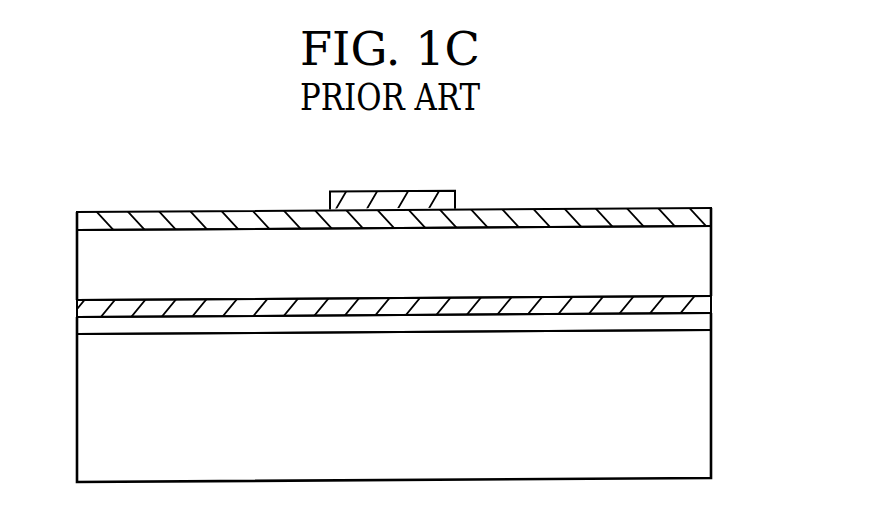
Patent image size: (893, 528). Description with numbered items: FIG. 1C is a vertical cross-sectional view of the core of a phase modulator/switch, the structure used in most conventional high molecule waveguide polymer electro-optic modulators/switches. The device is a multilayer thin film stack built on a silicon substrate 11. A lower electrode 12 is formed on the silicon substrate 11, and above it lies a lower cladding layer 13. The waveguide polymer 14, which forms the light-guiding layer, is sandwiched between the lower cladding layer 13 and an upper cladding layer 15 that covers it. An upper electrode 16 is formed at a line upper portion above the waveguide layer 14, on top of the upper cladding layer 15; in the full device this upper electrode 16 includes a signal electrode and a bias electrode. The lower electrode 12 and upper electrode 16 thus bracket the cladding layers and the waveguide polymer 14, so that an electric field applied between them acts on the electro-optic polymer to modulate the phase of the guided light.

The silicon substrate 11 is at (698, 392).
The lower electrode 12 is at (700, 318).
The lower cladding layer 13 is at (700, 302).
The waveguide polymer 14 is at (698, 256).
The upper cladding layer 15 is at (712, 215).
The upper electrode 16 is at (455, 203).